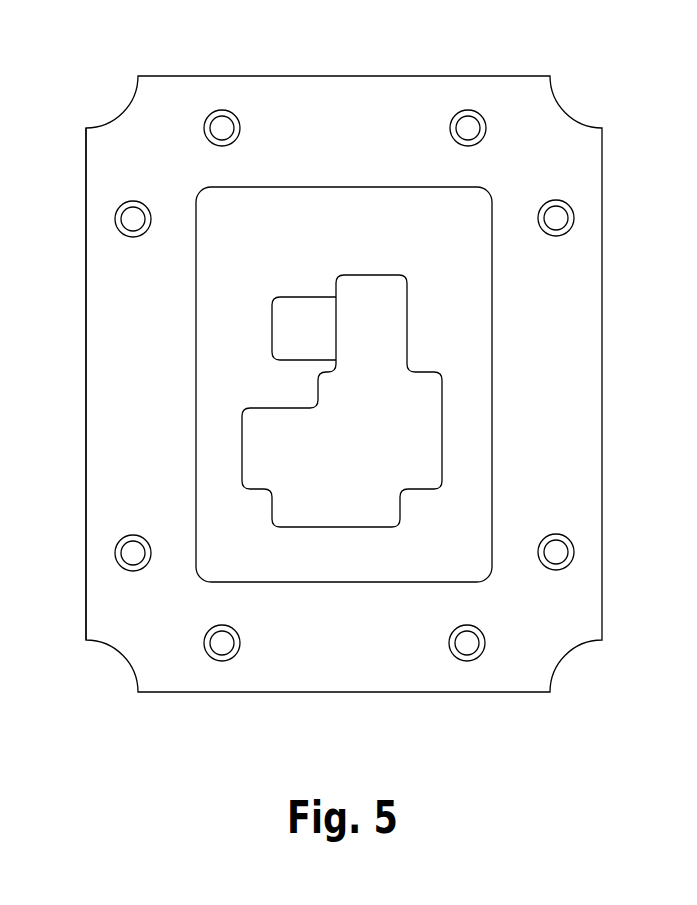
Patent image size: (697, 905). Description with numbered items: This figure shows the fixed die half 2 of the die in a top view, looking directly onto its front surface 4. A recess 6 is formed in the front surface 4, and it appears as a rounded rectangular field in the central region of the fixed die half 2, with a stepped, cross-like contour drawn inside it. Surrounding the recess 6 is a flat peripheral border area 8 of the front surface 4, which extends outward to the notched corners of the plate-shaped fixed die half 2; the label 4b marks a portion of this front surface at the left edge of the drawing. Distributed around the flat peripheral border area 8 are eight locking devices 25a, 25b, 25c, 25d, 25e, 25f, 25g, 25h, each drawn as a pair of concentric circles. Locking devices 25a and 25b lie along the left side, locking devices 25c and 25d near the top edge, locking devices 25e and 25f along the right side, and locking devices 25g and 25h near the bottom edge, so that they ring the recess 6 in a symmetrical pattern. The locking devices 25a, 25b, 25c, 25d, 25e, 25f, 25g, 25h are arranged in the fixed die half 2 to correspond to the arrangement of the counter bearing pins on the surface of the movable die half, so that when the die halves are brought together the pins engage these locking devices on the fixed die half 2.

The fixed die half 2 is at (293, 665).
The front surface 4 is at (293, 121).
The side face of body 4b is at (43, 384).
The recess 6 is at (285, 234).
The flat peripheral border area 8 is at (102, 418).
The locking device 25a is at (130, 553).
The locking device 25b is at (130, 220).
The locking device 25c is at (222, 126).
The locking device 25d is at (468, 126).
The locking device 25e is at (560, 214).
The locking device 25f is at (562, 551).
The locking device 25g is at (467, 645).
The locking device 25h is at (222, 645).